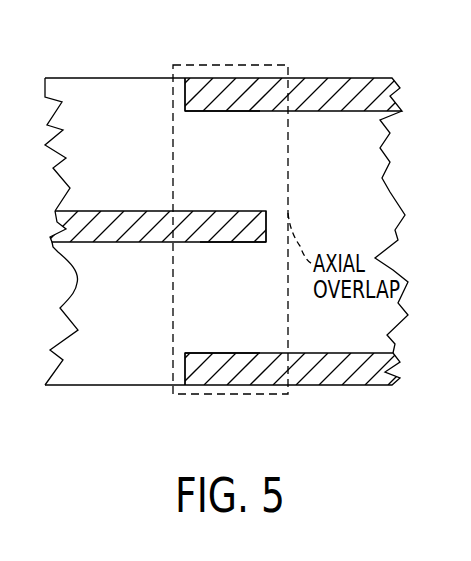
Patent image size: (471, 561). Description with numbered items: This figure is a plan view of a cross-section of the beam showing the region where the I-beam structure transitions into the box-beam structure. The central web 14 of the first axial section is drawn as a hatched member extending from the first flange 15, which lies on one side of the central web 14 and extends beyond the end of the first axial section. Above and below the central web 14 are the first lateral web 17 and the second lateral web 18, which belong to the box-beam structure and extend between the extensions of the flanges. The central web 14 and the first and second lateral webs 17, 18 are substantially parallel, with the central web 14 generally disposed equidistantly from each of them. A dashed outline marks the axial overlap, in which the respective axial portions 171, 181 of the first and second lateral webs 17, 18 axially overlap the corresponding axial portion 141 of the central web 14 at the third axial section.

The central web 14 is at (122, 210).
The axial portion of the central web 141 is at (220, 232).
The first flange 15 is at (340, 223).
The first lateral web 17 is at (325, 111).
The axial portion of the first lateral web 171 is at (207, 95).
The second lateral web 18 is at (325, 385).
The axial portion of the second lateral web 181 is at (225, 368).